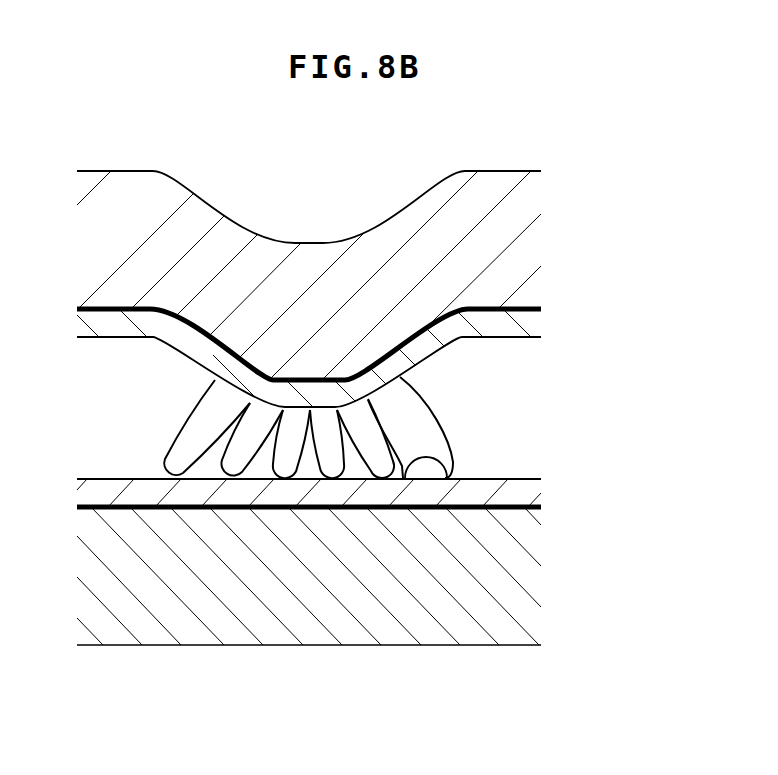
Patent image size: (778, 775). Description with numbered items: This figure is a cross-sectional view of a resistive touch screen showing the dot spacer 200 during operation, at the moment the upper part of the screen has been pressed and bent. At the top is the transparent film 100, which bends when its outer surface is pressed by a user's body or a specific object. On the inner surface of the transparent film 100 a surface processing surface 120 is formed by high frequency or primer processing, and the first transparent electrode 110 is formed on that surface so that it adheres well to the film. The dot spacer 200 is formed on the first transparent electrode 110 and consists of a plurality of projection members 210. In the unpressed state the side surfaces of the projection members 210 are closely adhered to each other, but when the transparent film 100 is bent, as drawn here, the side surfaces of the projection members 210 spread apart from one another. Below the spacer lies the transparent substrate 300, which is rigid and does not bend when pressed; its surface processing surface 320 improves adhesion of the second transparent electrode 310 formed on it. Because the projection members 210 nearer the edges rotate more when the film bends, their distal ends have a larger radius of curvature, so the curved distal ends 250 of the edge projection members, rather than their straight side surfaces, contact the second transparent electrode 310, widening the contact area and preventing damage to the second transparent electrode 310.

The transparent film 100 is at (502, 219).
The first transparent electrode 110 is at (520, 326).
The surface processing surface 120 is at (473, 298).
The dot spacer 200 is at (390, 427).
The projection members 210 is at (368, 427).
The distal ends 250 is at (404, 480).
The transparent substrate 300 is at (510, 607).
The second transparent electrode 310 is at (522, 480).
The surface processing surface 320 is at (497, 513).